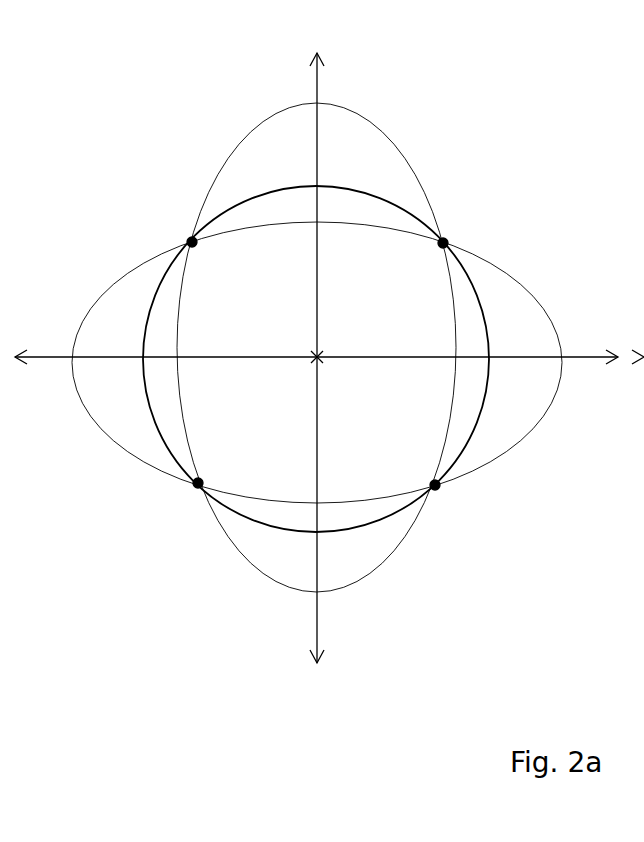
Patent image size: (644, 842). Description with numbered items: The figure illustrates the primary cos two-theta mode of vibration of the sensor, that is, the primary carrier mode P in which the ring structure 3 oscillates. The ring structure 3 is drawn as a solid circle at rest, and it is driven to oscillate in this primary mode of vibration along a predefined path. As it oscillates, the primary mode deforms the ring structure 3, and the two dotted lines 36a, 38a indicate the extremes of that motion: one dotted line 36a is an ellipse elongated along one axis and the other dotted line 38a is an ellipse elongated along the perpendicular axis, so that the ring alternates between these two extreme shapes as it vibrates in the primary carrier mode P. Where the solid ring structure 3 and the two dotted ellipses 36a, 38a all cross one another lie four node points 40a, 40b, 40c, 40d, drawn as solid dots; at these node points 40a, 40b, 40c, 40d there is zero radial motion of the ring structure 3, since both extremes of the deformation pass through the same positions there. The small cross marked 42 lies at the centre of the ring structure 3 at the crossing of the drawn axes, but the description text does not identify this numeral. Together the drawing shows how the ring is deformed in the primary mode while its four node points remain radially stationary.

The primary carrier mode P is at (317, 83).
The ring structure 3 is at (152, 415).
The dotted line 36a is at (417, 172).
The dotted line 38a is at (105, 292).
The node point 40a is at (190, 241).
The node point 40b is at (445, 242).
The node point 40c is at (197, 484).
The node point 40d is at (436, 486).
The center point 42 is at (336, 364).